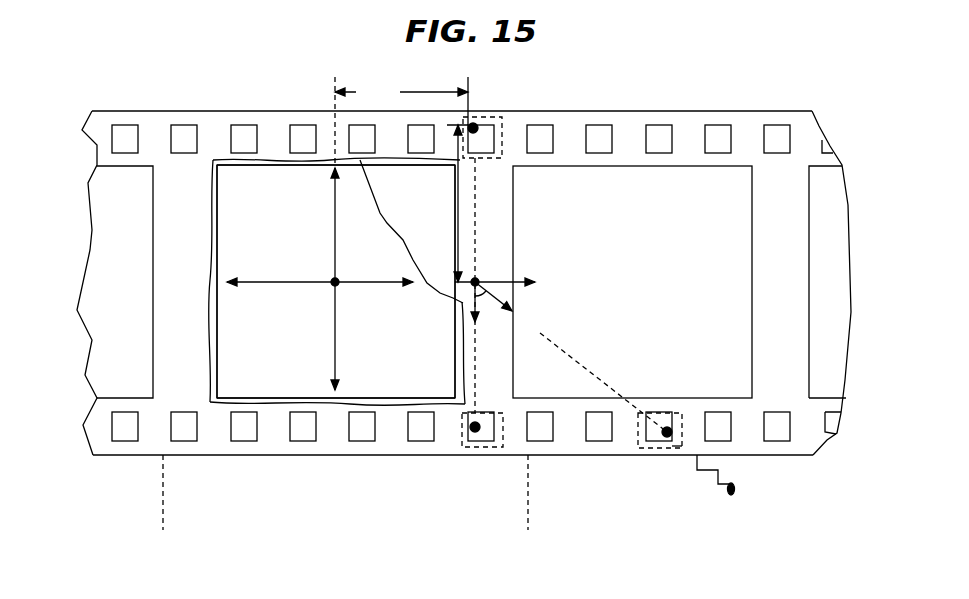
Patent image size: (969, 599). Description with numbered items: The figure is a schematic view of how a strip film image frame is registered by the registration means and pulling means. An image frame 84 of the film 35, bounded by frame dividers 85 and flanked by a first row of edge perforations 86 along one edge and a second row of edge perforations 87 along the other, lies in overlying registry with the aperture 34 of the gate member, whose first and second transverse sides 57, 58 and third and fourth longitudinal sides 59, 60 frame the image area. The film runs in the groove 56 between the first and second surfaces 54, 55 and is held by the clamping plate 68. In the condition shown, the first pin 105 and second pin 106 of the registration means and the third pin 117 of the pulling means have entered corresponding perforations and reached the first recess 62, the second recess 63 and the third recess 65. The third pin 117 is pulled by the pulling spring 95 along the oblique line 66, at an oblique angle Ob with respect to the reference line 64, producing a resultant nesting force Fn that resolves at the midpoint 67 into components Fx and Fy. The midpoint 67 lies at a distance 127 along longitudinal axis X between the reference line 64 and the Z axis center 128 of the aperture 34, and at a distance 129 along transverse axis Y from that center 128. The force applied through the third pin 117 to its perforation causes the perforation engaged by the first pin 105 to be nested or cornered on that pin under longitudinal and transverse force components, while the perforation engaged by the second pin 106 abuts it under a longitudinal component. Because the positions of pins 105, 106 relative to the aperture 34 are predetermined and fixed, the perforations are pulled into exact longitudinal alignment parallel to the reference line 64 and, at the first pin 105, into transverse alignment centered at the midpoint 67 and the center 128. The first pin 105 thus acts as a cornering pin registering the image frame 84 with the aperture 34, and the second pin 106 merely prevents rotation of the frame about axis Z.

The aperture 34 is at (215, 368).
The film 35 is at (157, 125).
The first surface 54 is at (105, 95).
The second surface 55 is at (105, 470).
The groove 56 is at (215, 302).
The first transverse side 57 is at (260, 163).
The second transverse side 58 is at (305, 395).
The third longitudinal side 59 is at (218, 340).
The fourth longitudinal side 60 is at (452, 388).
The first recess 62 is at (463, 135).
The second recess 63 is at (470, 447).
The reference line 64 is at (477, 234).
The third recess 65 is at (667, 430).
The oblique line 66 is at (592, 373).
The midpoint 67 is at (478, 280).
The clamping plate 68 is at (163, 508).
The image frame 84 is at (738, 225).
The frame divider 85 is at (162, 270).
The first row of edge perforations 86 is at (237, 125).
The second row of edge perforations 87 is at (245, 442).
The pulling spring 95 is at (702, 472).
The first pin 105 is at (474, 124).
The second pin 106 is at (478, 427).
The third pin 117 is at (668, 440).
The distance 127 is at (401, 121).
The center 128 is at (337, 284).
The distance 129 is at (458, 183).